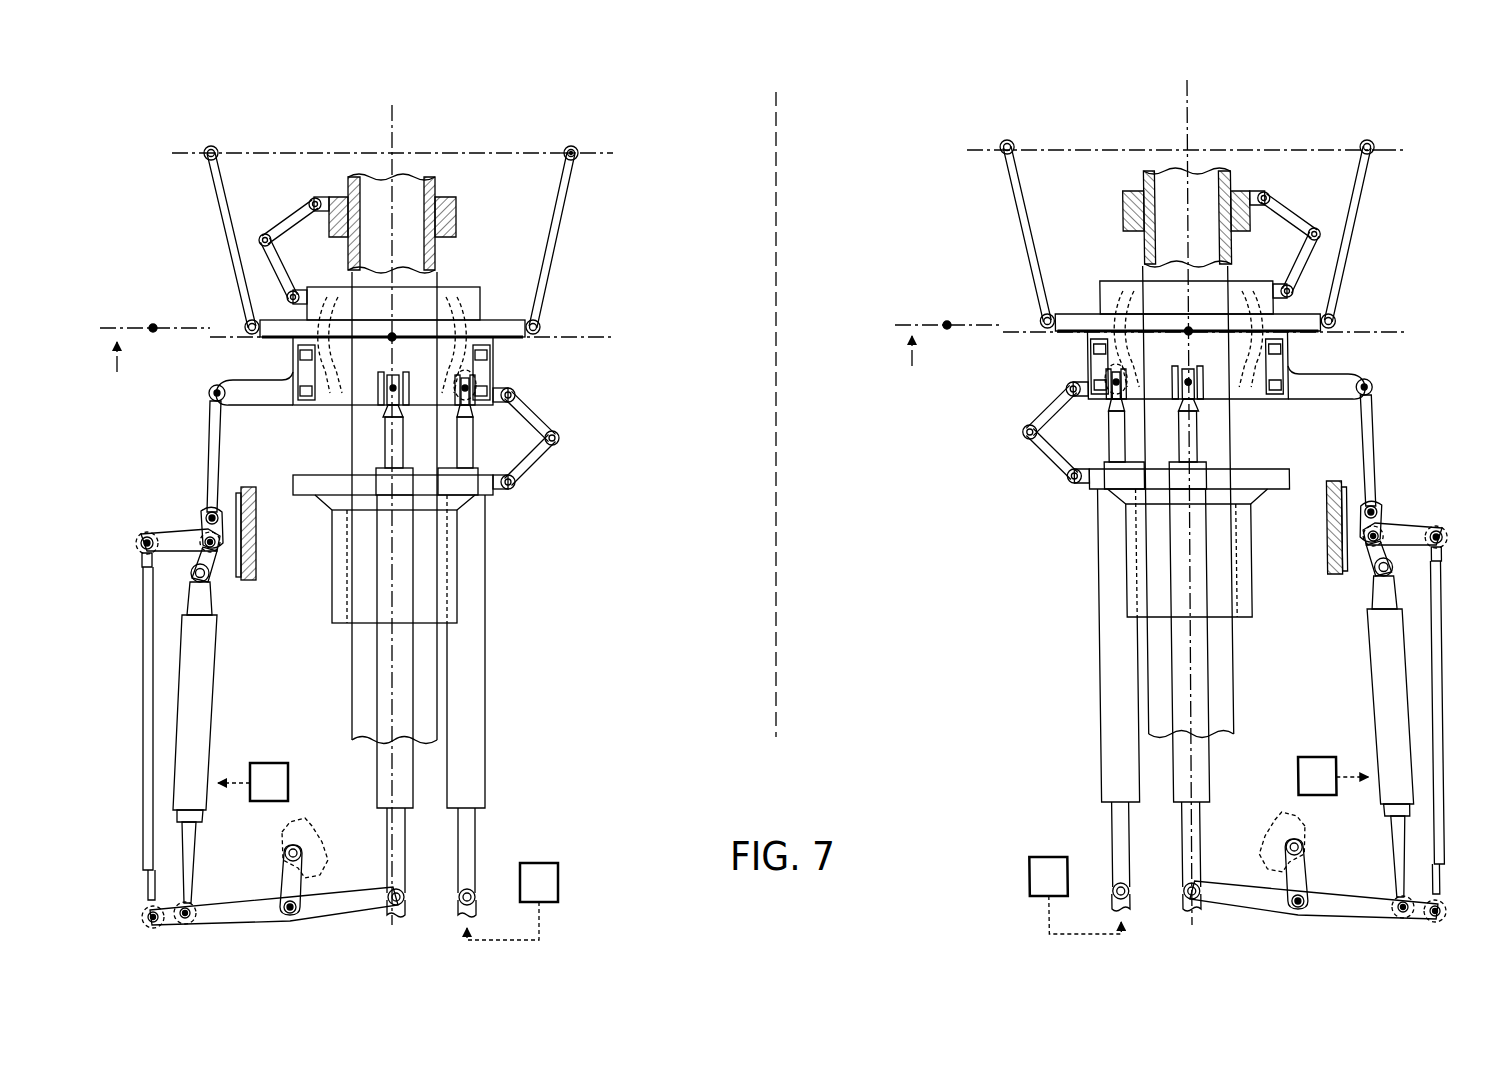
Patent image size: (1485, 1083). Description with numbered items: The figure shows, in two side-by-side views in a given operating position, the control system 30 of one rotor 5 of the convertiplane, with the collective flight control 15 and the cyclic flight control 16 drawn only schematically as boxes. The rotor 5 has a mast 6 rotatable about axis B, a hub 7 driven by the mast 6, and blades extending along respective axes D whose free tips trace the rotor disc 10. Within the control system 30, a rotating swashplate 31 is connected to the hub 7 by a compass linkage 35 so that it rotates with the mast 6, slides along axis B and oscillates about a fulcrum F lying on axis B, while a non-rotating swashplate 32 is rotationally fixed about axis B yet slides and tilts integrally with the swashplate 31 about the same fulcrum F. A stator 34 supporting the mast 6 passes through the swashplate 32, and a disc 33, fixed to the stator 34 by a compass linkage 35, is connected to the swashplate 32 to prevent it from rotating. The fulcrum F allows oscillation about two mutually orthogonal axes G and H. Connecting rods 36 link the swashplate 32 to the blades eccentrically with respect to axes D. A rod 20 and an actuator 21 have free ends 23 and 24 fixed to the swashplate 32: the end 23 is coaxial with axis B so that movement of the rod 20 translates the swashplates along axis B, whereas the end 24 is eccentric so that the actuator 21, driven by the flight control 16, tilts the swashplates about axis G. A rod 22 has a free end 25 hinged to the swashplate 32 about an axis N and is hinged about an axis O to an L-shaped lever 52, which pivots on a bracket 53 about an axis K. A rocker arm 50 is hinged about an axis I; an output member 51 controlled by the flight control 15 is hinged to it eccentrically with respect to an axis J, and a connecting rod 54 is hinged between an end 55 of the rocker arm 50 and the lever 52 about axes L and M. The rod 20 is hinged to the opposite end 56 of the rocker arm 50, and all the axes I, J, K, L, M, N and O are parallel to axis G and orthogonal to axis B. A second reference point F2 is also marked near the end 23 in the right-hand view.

The rotor 5 is at (633, 148).
The mast 6 is at (343, 186).
The hub 7 is at (1237, 205).
The rotor disc 10 is at (283, 147).
The flight control 15 is at (270, 765).
The flight control 16 is at (569, 866).
The rod 20 is at (405, 797).
The actuator 21 is at (470, 752).
The rod 22 is at (217, 458).
The free end 23 is at (390, 393).
The free end 24 is at (470, 397).
The free end 25 is at (225, 407).
The control system 30 is at (603, 437).
The rotating swashplate 31 is at (489, 281).
The non-rotating swashplate 32 is at (508, 377).
The disc 33 is at (472, 490).
The stator 34 is at (455, 572).
The compass linkage 35 is at (554, 471).
The connecting rods 36 is at (222, 195).
The rocker arm 50 is at (353, 915).
The output member 51 is at (200, 688).
The lever 52 is at (187, 538).
The bracket 53 is at (252, 537).
The connecting rod 54 is at (148, 808).
The end 55 is at (172, 919).
The end 56 is at (399, 906).
The axis B is at (402, 118).
The axis D is at (590, 157).
The fulcrum F is at (392, 335).
The pivot point F2 is at (1183, 392).
The axis G is at (157, 322).
The axis H is at (512, 364).
The axis I is at (291, 912).
The axis J is at (190, 905).
The axis K is at (214, 577).
The axis L is at (150, 922).
The axis M is at (144, 551).
The axis N is at (212, 391).
The axis O is at (210, 512).